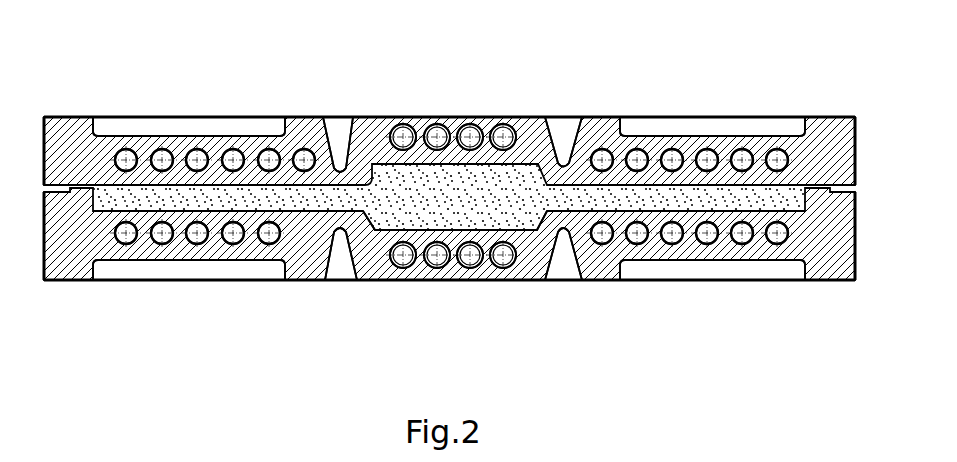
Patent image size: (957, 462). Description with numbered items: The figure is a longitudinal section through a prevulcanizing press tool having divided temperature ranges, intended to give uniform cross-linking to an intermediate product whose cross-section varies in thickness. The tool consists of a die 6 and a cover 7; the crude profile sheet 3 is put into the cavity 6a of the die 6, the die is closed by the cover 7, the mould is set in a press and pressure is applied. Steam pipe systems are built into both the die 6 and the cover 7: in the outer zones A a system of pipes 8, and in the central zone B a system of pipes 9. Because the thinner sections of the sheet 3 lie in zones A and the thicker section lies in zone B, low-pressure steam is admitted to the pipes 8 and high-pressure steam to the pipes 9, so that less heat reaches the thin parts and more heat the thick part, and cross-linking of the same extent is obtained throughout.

The crude profile sheet 3 is at (374, 182).
The die 6 is at (68, 283).
The cavity 6a is at (368, 283).
The cover 7 is at (596, 119).
The pipes 8 is at (125, 148).
The pipes 9 is at (503, 126).
The zones A is at (163, 115).
The zone B is at (415, 114).